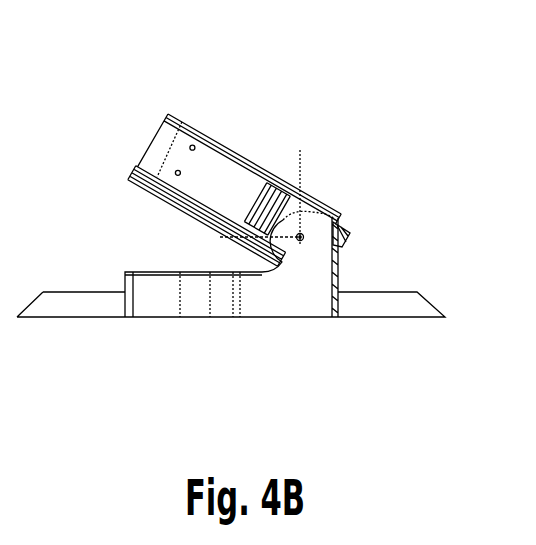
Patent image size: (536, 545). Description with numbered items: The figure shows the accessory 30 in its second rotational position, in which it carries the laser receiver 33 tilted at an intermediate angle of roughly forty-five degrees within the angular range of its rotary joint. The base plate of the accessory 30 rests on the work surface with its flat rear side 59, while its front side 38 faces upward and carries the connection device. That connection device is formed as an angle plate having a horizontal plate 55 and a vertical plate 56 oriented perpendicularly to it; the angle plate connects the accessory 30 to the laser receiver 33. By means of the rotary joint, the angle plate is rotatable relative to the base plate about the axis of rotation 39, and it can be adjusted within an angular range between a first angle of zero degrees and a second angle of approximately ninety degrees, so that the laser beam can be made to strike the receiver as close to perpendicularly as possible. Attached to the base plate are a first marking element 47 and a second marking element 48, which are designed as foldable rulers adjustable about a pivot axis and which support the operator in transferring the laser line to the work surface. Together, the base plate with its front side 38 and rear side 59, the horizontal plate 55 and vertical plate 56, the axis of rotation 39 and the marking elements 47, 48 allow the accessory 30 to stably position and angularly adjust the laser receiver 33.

The accessory 30 is at (231, 217).
The laser receiver 33 is at (226, 149).
The front side 38 is at (163, 271).
The axis of rotation 39 is at (300, 242).
The first marking element 47 is at (72, 303).
The second marking element 48 is at (387, 303).
The horizontal plate 55 is at (135, 190).
The vertical plate 56 is at (348, 240).
The rear side 59 is at (229, 320).